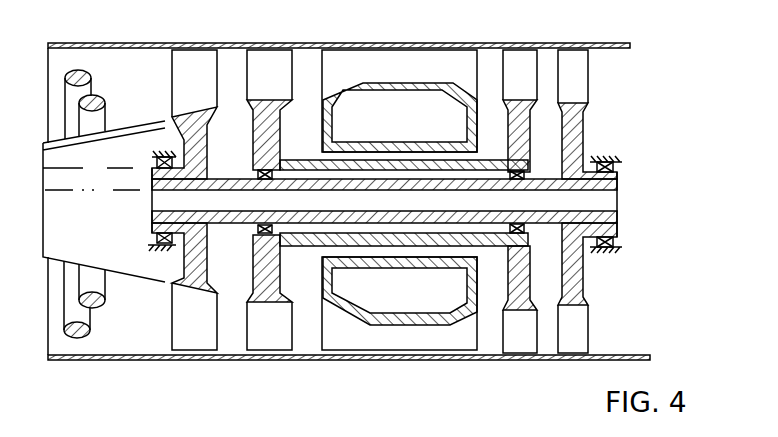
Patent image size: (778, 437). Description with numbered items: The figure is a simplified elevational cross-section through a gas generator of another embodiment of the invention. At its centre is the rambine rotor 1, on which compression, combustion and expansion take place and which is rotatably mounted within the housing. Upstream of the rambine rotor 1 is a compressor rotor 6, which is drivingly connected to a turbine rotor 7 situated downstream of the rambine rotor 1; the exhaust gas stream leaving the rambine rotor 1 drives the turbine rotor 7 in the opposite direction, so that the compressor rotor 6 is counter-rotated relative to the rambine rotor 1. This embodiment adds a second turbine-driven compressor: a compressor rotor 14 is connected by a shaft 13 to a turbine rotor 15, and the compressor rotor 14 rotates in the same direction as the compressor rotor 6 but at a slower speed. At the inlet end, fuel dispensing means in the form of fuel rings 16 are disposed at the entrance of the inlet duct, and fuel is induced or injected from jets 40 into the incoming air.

The rambine rotor 1 is at (419, 83).
The compressor rotor 6 is at (260, 277).
The turbine rotor 7 is at (542, 177).
The shaft 13 is at (545, 187).
The compressor rotor 14 is at (195, 278).
The turbine rotor 15 is at (578, 281).
The fuel rings 16 is at (105, 101).
The jets 40 is at (108, 300).